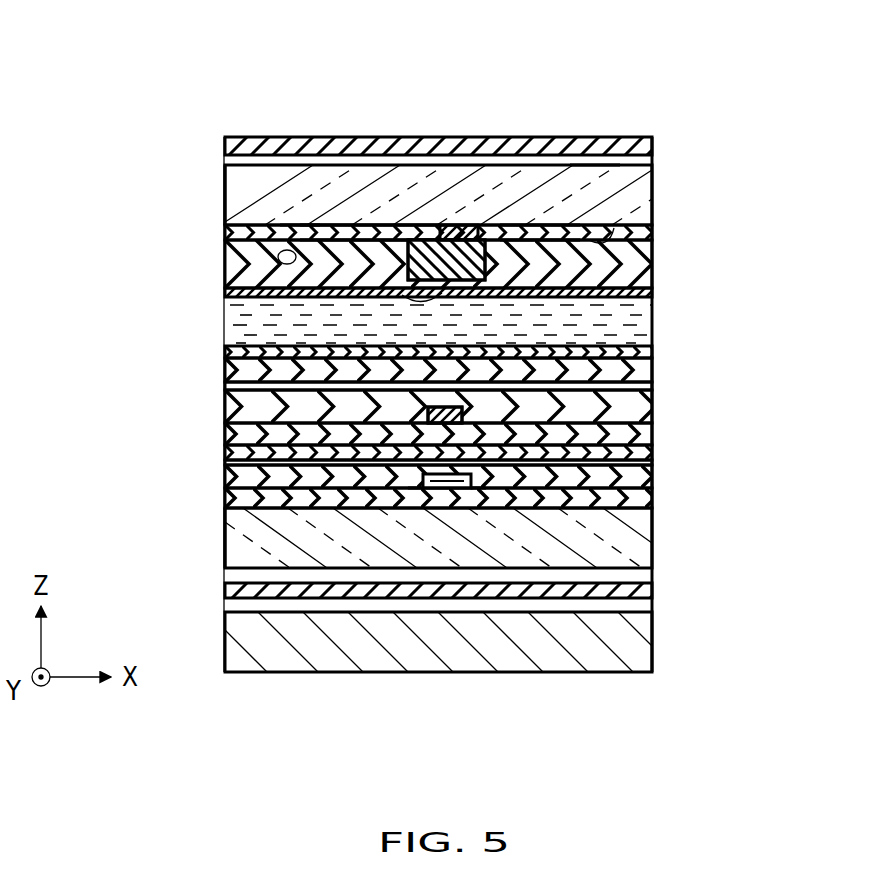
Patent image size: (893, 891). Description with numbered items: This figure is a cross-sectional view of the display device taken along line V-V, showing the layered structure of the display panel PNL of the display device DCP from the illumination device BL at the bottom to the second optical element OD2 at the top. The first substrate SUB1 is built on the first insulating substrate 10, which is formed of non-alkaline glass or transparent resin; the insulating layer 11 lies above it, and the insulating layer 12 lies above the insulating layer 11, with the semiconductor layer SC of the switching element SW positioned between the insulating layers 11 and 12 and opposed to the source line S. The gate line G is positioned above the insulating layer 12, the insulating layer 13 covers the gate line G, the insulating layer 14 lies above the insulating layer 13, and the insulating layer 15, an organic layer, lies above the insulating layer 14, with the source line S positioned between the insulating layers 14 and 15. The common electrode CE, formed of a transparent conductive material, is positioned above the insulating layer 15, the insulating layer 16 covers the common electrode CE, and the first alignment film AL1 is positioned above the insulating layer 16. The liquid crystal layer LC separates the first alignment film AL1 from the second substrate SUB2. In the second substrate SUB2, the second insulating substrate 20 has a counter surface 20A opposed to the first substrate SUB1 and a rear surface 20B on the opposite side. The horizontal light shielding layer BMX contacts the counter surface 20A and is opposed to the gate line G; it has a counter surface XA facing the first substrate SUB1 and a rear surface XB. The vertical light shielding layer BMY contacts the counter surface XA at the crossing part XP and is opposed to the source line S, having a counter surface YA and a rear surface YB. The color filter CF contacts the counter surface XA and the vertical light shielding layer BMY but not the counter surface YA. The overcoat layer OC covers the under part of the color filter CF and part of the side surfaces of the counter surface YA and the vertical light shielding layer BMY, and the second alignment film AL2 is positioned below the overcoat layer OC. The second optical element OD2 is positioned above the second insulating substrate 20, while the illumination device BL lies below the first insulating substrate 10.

The second optical element OD2 is at (655, 147).
The second insulating substrate 20 is at (655, 210).
The counter surface 20A is at (614, 228).
The rear surface 20B is at (597, 160).
The horizontal light shielding layer BMX is at (240, 236).
The vertical light shielding layer BMY is at (467, 230).
The color filter CF is at (540, 250).
The overcoat layer OC is at (655, 272).
The crossing part XP is at (482, 236).
The second alignment film AL2 is at (655, 291).
The liquid crystal layer LC is at (232, 316).
The first alignment film AL1 is at (655, 350).
The insulating layer 16 is at (645, 372).
The common electrode CE is at (232, 384).
The insulating layer 15 is at (650, 405).
The insulating layer 14 is at (650, 432).
The insulating layer 13 is at (650, 455).
The insulating layer 12 is at (650, 482).
The insulating layer 11 is at (650, 506).
The first insulating substrate 10 is at (655, 550).
The illumination device BL is at (655, 650).
The first substrate SUB1 is at (214, 474).
The second substrate SUB2 is at (214, 195).
The counter surface XA is at (279, 251).
The rear surface XB is at (299, 222).
The counter surface YA is at (402, 295).
The rear surface YB is at (457, 232).
The display panel DCP is at (706, 86).
The panel PNL is at (732, 229).
The source line S is at (408, 488).
The semiconductor layer SC is at (436, 488).
The switching element SW is at (472, 486).
The gate line G is at (588, 445).
The line V- V is at (437, 421).